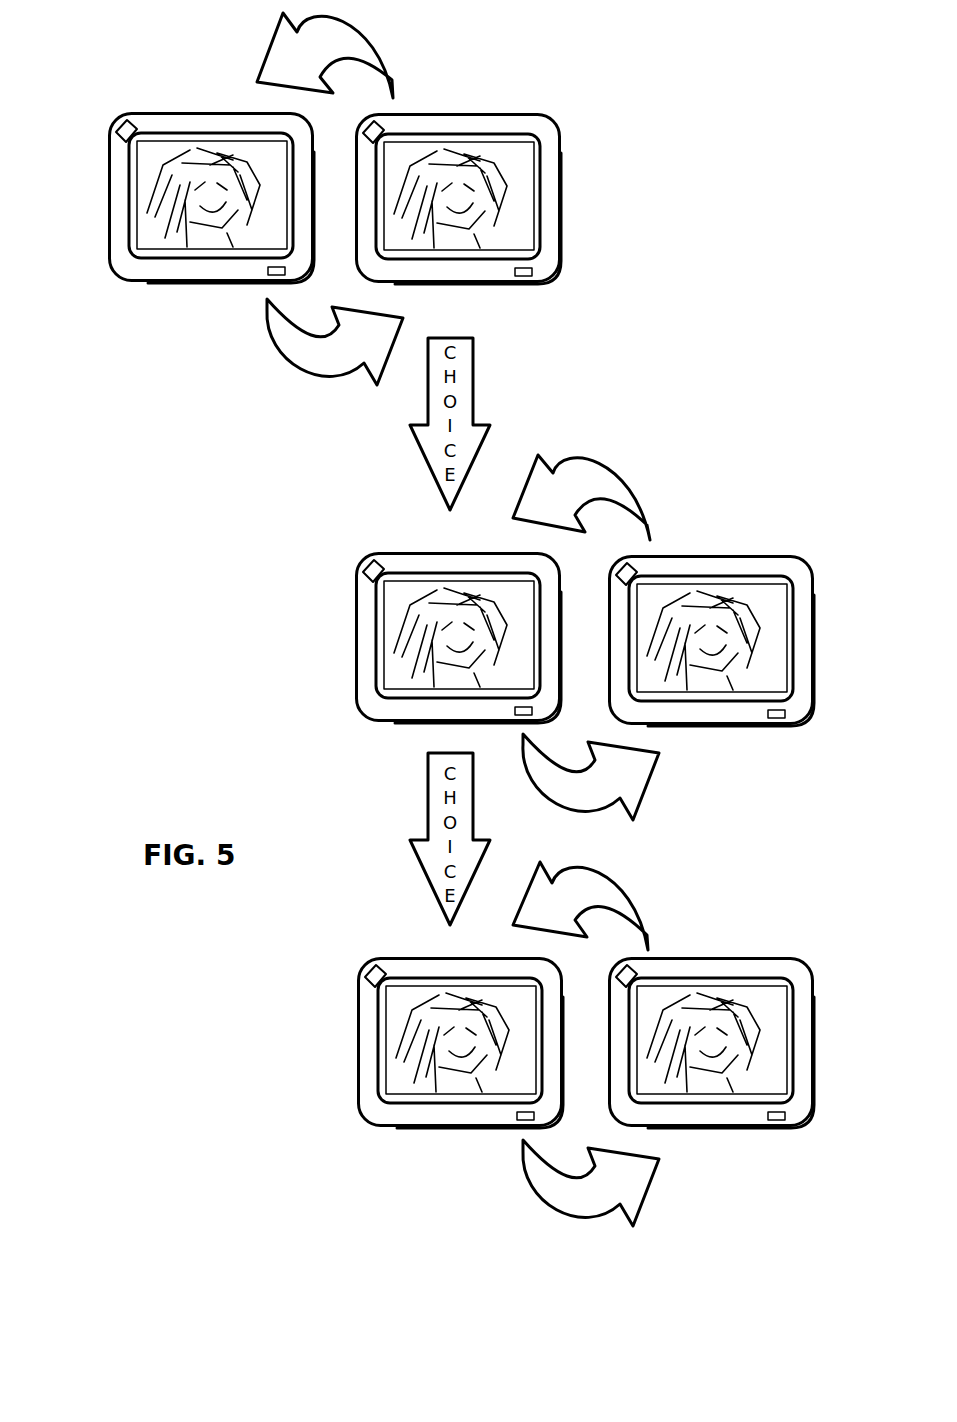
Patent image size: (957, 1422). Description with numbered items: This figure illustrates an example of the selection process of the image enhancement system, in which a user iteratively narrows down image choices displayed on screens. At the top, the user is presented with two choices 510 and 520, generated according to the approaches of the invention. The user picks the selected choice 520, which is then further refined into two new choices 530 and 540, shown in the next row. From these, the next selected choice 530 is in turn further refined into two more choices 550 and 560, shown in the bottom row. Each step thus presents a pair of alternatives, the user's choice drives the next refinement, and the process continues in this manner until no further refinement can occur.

The choice 510 is at (108, 187).
The selected choice 520 is at (565, 218).
The refined choice 530 is at (355, 638).
The refined choice 540 is at (817, 640).
The further refined choice 550 is at (357, 1045).
The further refined choice 560 is at (817, 1048).